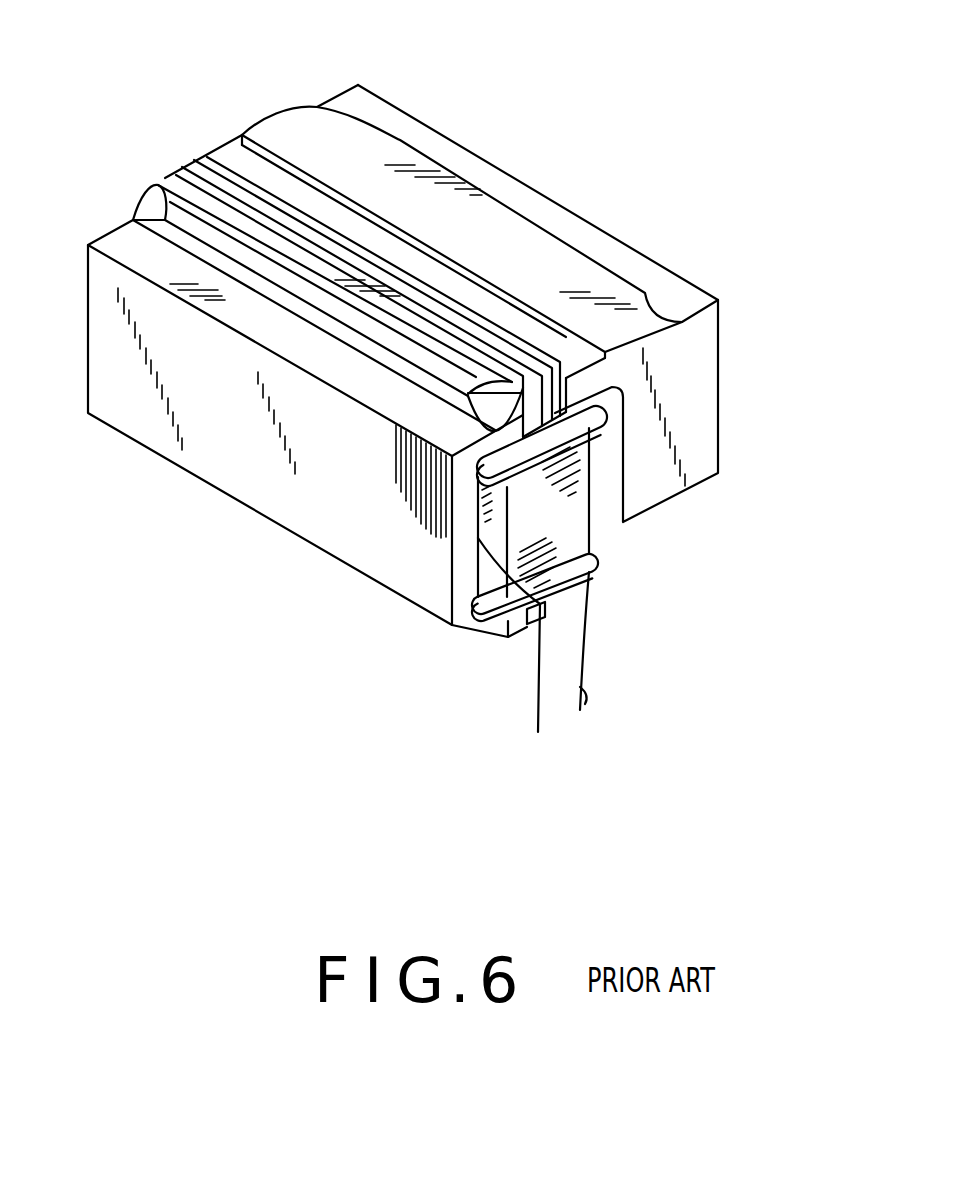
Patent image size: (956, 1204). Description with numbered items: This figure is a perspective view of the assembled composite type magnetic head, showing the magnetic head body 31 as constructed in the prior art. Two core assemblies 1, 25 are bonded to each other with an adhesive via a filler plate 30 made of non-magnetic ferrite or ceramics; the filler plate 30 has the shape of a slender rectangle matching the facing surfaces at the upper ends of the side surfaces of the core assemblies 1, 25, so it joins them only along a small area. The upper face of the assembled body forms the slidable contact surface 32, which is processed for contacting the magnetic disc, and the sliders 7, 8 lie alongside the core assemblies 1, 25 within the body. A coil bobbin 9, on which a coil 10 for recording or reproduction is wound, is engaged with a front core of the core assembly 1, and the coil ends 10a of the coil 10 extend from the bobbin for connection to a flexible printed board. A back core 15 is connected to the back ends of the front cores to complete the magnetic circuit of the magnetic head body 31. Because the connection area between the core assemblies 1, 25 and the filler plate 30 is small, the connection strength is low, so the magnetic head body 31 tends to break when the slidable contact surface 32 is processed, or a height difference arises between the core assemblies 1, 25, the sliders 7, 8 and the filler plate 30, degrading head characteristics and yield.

The core assembly 1 is at (178, 182).
The slider 7 is at (245, 490).
The slider 8 is at (703, 355).
The coil bobbin 9 is at (590, 577).
The coil 10 is at (575, 523).
The coil ends 10a is at (540, 707).
The back core 15 is at (530, 627).
The core assembly 25 is at (207, 158).
The filler plate 30 is at (190, 165).
The magnetic head body 31 is at (497, 167).
The slidable contact surface 32 is at (167, 203).